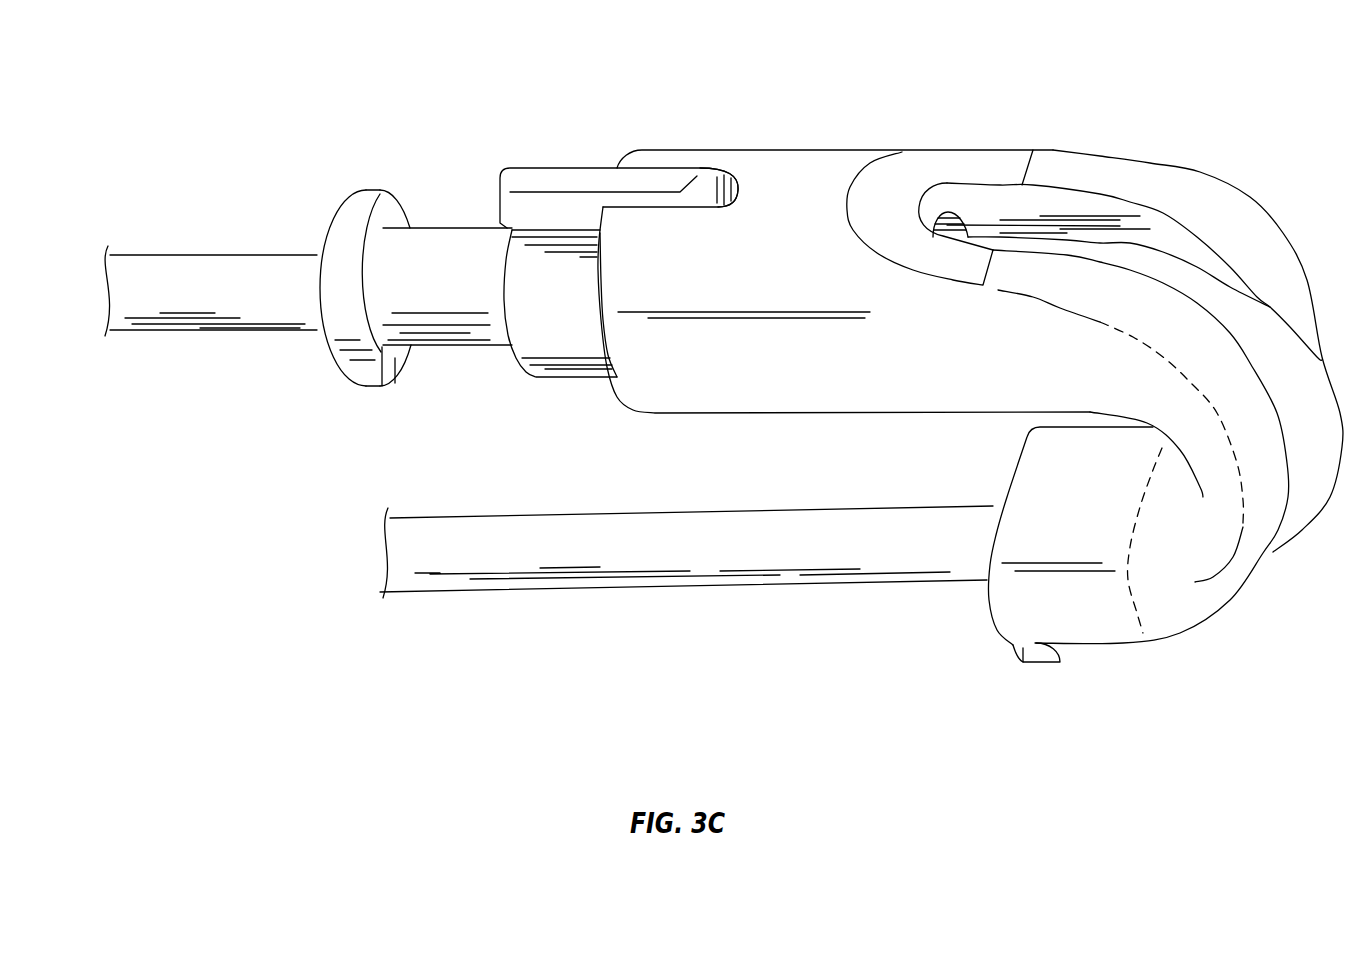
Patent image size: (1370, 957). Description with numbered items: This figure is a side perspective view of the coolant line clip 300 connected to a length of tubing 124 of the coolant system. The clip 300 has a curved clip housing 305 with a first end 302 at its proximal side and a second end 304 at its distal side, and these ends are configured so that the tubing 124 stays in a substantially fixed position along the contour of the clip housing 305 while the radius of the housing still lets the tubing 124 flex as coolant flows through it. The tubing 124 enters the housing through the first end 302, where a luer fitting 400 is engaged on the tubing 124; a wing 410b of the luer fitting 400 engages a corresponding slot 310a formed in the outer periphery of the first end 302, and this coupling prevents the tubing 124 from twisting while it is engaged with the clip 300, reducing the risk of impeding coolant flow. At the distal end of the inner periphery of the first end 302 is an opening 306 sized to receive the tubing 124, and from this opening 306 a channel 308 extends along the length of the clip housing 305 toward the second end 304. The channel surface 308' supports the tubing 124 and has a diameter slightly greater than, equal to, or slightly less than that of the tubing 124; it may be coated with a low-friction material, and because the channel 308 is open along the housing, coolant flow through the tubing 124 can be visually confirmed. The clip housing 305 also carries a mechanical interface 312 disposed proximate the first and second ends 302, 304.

The tubing 124 is at (233, 263).
The clip 300 is at (860, 63).
The first end 302 is at (805, 158).
The second end 304 is at (1007, 490).
The clip housing 305 is at (919, 120).
The opening 306 is at (965, 218).
The channel 308 is at (1134, 271).
The channel surface 308' is at (1141, 388).
The slot 310a is at (720, 175).
The mechanical interface 312 is at (1022, 660).
The luer fitting 400 is at (457, 232).
The wing 410b is at (573, 175).